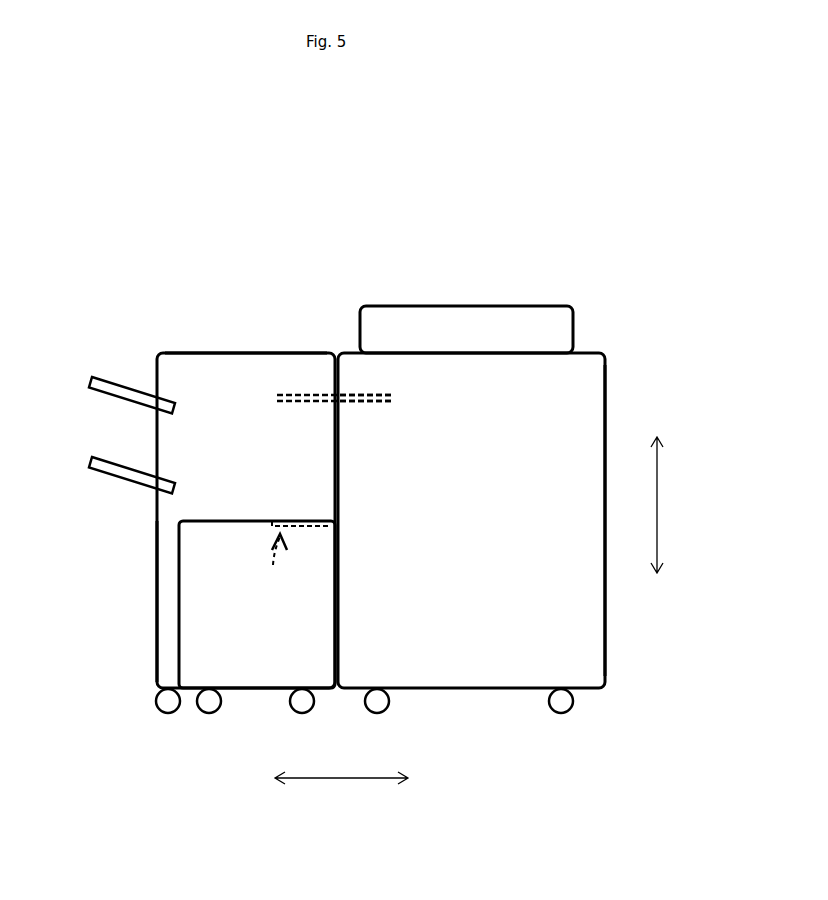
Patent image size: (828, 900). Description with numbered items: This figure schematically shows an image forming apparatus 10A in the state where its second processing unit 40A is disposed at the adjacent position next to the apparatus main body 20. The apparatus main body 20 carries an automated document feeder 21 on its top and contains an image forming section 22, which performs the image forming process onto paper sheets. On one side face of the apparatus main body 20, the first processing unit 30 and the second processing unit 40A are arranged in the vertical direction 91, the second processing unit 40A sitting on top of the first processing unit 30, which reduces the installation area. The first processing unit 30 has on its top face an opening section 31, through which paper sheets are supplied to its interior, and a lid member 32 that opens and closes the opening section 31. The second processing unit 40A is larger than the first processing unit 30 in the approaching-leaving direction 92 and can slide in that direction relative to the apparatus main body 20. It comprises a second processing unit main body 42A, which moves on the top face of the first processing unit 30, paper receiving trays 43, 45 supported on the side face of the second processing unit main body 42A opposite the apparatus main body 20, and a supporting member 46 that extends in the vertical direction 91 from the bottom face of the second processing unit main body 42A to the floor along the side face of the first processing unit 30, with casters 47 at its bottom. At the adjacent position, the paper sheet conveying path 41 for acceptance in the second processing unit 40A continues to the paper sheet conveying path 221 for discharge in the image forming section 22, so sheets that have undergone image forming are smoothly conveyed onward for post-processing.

The image forming apparatus 10A is at (104, 195).
The apparatus main body 20 is at (621, 320).
The automated document feeder 21 is at (544, 306).
The image forming section 22 is at (615, 393).
The paper sheet conveying path for discharge 221 is at (376, 401).
The first processing unit 30 is at (240, 690).
The opening section 31 is at (274, 560).
The lid member 32 is at (306, 526).
The second processing unit 40A is at (212, 318).
The paper sheet conveying path for acceptance 41 is at (292, 401).
The second processing unit main body 42A is at (275, 353).
The paper receiving tray 43 is at (88, 385).
The paper receiving tray 45 is at (88, 467).
The supporting member 46 is at (137, 587).
The casters 47 is at (158, 700).
The vertical direction 91 is at (669, 505).
The approaching-leaving direction 92 is at (341, 769).